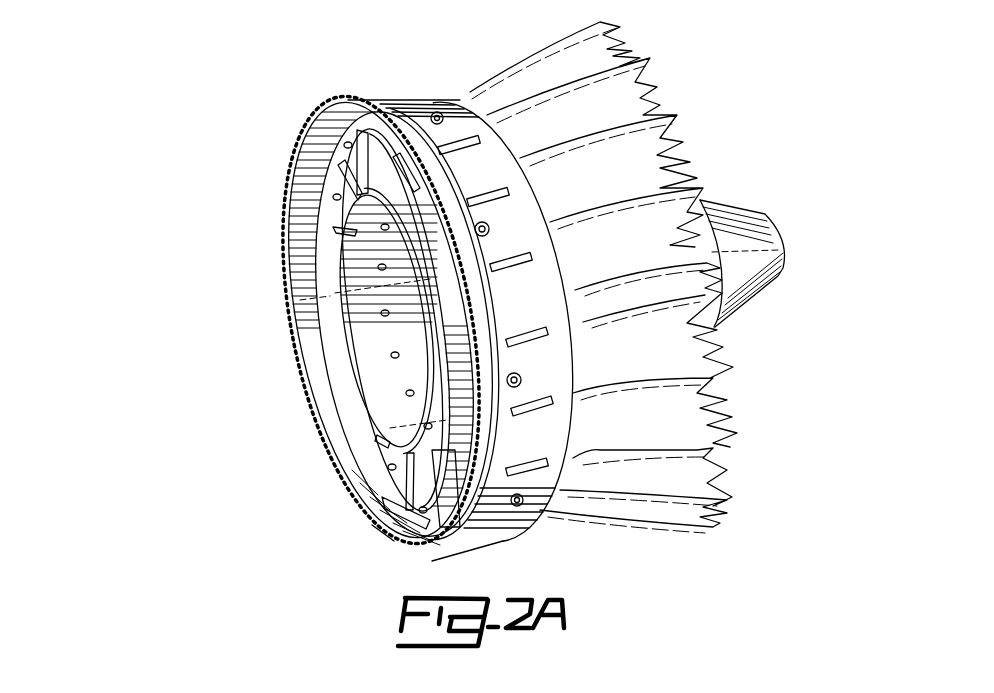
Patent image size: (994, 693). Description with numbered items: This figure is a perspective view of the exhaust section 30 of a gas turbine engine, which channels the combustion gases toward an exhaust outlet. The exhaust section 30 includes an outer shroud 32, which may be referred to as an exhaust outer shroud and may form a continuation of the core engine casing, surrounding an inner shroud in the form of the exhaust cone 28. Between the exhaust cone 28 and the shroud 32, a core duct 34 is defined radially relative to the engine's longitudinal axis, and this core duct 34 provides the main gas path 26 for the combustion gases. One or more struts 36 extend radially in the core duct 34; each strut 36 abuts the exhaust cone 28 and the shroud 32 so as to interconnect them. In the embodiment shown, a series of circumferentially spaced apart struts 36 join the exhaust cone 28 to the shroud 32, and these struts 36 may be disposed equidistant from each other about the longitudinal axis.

The exhaust section 30 is at (184, 193).
The outer shroud 32 is at (418, 137).
The exhaust cone 28 is at (353, 353).
The main gas path 26 is at (360, 424).
The core duct 34 is at (387, 463).
The strut 36 is at (380, 522).